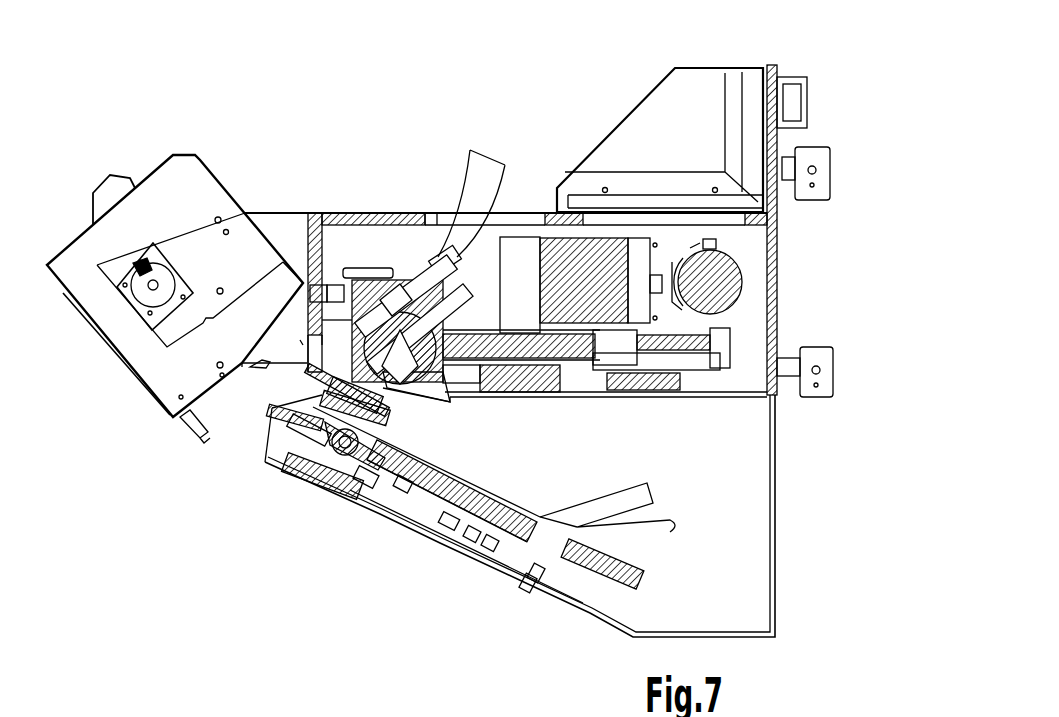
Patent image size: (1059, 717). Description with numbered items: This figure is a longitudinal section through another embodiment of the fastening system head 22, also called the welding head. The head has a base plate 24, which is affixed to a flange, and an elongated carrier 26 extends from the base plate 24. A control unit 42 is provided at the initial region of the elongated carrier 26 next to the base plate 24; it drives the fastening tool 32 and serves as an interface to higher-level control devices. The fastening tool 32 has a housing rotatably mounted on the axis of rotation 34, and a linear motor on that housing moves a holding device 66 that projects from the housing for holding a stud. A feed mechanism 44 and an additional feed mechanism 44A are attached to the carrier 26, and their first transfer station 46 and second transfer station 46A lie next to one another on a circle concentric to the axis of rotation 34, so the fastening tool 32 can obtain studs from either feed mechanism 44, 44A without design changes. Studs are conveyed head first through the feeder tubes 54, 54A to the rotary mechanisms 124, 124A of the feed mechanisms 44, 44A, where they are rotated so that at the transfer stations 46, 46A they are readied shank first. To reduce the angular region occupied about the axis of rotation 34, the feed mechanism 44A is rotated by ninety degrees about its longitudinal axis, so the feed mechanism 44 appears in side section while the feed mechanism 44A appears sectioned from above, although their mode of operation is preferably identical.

The fastening system head 22 is at (802, 49).
The base plate 24 is at (778, 258).
The elongated carrier 26 is at (367, 265).
The fastening tool 32 is at (188, 198).
The axis of rotation 34 is at (128, 308).
The control unit 42 is at (663, 108).
The feed mechanism 44 is at (517, 272).
The additional feed mechanism 44A is at (426, 551).
The first transfer station 46 is at (296, 344).
The second transfer station 46A is at (258, 420).
The feeder tube 54 is at (484, 167).
The additional feeder tube 54A is at (627, 493).
The holding device 66 is at (197, 440).
The rotary mechanism 124 is at (355, 275).
The rotary mechanism 124A is at (338, 460).